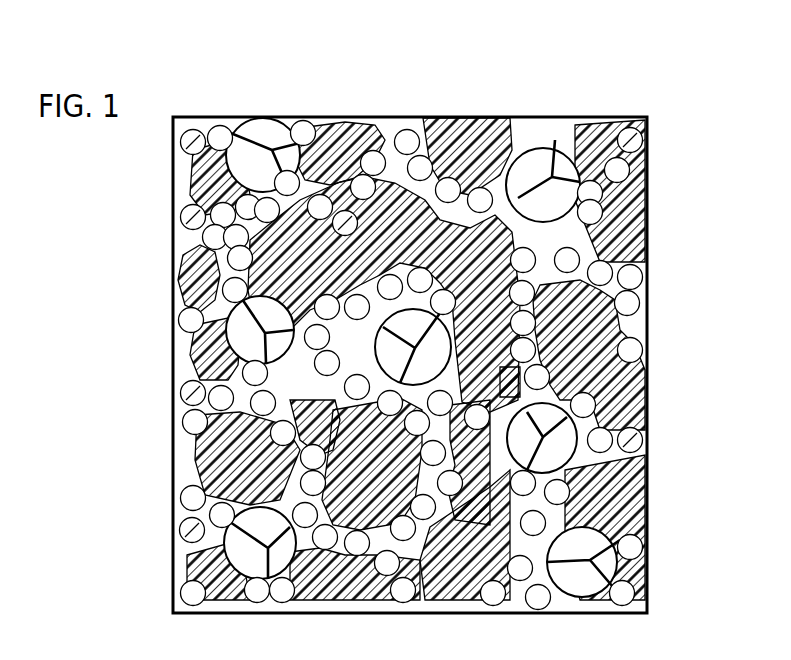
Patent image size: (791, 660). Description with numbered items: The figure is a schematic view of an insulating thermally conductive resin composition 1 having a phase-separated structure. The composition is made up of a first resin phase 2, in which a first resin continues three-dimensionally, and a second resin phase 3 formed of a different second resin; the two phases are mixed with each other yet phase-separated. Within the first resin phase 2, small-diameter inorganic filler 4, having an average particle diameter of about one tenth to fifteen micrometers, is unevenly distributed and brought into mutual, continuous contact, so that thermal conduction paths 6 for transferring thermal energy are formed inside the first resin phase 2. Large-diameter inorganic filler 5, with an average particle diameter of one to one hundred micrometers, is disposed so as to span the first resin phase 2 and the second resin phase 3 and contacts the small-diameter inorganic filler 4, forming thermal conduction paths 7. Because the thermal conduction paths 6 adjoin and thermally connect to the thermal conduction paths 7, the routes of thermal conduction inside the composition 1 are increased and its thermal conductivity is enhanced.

The insulating thermally conductive resin composition 1 is at (552, 110).
The first resin phase 2 is at (637, 174).
The second resin phase 3 is at (612, 252).
The small-diameter inorganic filler 4 is at (642, 443).
The large-diameter inorganic filler 5 is at (267, 122).
The thermal conduction paths 6 is at (182, 420).
The thermal conduction paths 7 is at (247, 130).